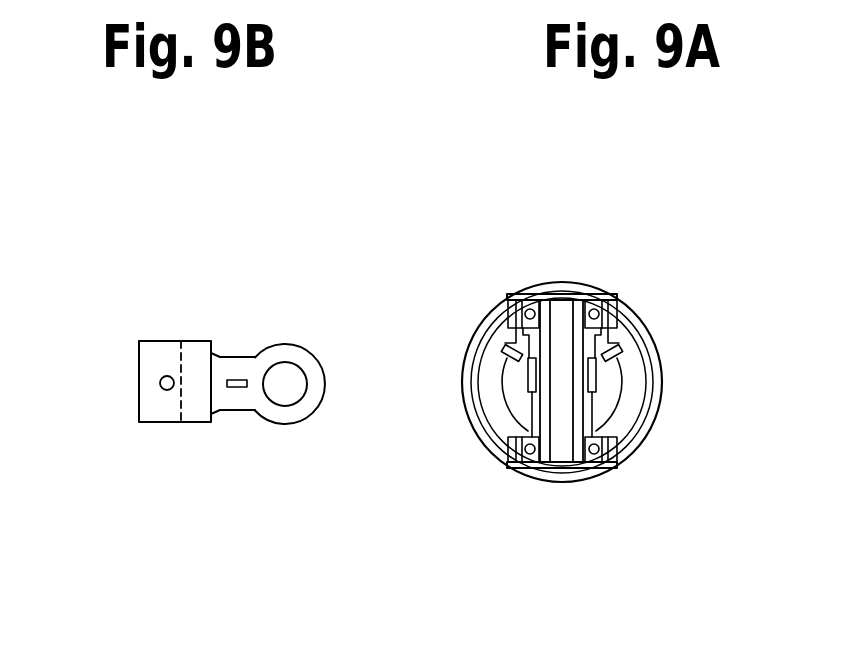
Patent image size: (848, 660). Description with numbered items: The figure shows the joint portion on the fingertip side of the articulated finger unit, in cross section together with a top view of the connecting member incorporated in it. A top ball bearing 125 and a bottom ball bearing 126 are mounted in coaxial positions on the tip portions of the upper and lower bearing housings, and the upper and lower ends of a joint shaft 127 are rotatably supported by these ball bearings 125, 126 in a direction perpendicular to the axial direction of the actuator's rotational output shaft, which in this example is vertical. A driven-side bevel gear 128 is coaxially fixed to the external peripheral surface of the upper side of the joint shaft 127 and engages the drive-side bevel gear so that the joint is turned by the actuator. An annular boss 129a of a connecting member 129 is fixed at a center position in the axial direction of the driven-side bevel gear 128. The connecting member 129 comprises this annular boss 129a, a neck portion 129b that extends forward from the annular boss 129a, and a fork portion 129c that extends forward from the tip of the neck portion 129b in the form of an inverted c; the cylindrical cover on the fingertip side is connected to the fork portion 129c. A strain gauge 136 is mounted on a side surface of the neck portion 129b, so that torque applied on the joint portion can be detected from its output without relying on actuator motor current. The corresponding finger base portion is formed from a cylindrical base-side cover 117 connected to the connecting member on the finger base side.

In FIG. 9A, the cylindrical base-side cover 117 is at (655, 340).
In FIG. 9A, the top ball bearing 125 is at (603, 293).
In FIG. 9A, the bottom ball bearing 126 is at (613, 448).
In FIG. 9A, the joint shaft 127 is at (578, 413).
In FIG. 9A, the driven-side bevel gear 128 is at (610, 357).
In FIG. 9B, the connecting member 129 is at (229, 413).
In FIG. 9A, the connecting member 129 is at (517, 397).
In FIG. 9B, the annular boss 129a is at (308, 347).
In FIG. 9B, the neck portion 129b is at (146, 368).
In FIG. 9B, the fork portion 129c is at (153, 353).
In FIG. 9B, the strain gauge 136 is at (240, 388).